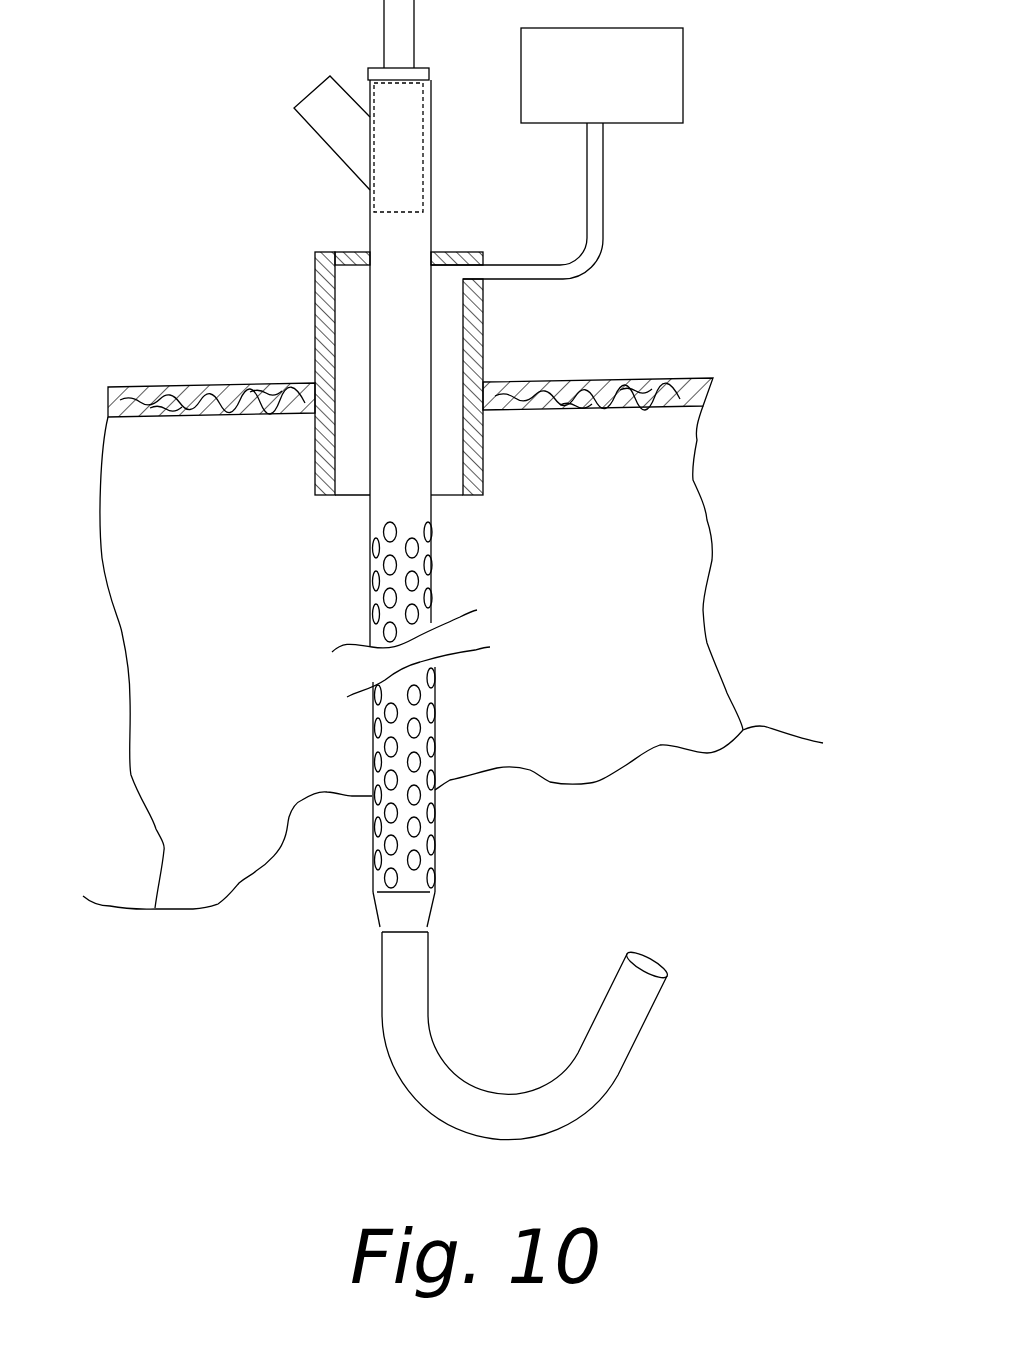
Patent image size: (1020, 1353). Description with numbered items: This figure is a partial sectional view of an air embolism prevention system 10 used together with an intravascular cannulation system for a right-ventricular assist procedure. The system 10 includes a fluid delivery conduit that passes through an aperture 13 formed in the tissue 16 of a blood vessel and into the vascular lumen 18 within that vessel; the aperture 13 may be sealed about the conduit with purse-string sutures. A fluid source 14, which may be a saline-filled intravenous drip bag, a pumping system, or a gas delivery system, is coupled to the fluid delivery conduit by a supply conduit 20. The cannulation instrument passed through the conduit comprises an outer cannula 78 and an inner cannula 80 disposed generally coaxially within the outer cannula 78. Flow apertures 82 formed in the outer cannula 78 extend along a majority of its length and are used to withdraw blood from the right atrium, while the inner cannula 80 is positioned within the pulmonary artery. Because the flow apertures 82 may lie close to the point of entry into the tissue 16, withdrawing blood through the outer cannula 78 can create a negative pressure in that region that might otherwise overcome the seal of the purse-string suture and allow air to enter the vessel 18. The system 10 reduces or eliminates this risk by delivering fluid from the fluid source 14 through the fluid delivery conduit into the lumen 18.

The air embolism prevention system 10 is at (462, 188).
The aperture 13 is at (313, 420).
The fluid source 14 is at (683, 82).
The anatomical tissue 16 is at (525, 380).
The vascular lumen 18 is at (597, 620).
The supply conduit 20 is at (603, 233).
The outer cannula 78 is at (360, 472).
The inner cannula 80 is at (430, 1032).
The flow apertures 82 is at (388, 597).